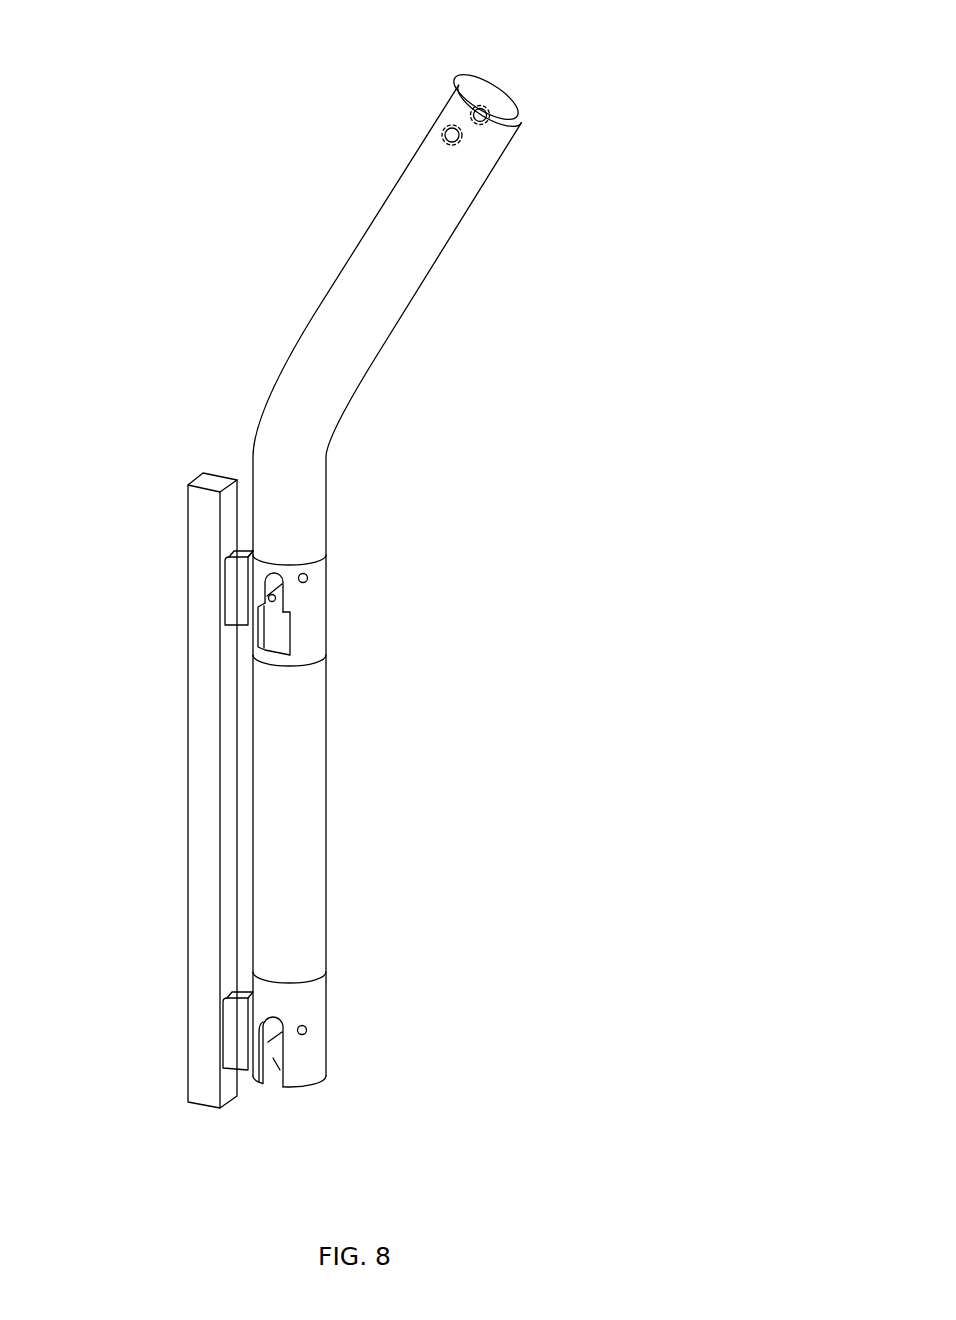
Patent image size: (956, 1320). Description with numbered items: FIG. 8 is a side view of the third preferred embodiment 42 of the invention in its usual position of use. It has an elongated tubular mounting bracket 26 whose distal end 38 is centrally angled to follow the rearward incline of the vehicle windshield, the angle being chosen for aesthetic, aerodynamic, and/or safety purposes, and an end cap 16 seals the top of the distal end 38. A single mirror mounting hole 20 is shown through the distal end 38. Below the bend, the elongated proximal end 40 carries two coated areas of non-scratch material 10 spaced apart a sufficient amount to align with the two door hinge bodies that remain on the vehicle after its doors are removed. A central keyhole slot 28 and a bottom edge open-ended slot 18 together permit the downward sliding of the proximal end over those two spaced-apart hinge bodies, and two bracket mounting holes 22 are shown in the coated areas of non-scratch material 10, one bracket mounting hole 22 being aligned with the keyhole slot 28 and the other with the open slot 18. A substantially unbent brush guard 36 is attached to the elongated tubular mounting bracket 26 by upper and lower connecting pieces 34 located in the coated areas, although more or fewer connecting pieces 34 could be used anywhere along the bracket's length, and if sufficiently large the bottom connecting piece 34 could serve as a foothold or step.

The non-scratch material 10 is at (326, 573).
The end cap 16 is at (502, 77).
The bottom edge open-ended slot 18 is at (284, 1084).
The mirror mounting hole 20 is at (456, 145).
The bracket mounting hole 22 is at (284, 598).
The elongated tubular mounting bracket 26 is at (325, 813).
The central keyhole slot 28 is at (273, 628).
The connecting piece 34 is at (223, 592).
The brush guard 36 is at (187, 758).
The distal end 38 is at (374, 135).
The elongated proximal end 40 is at (385, 882).
The third preferred embodiment 42 is at (168, 545).